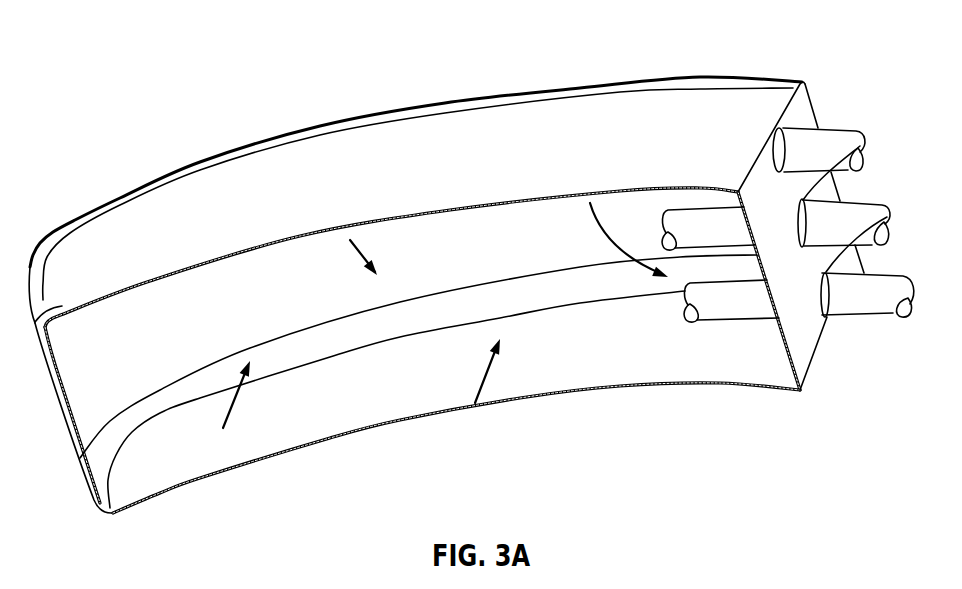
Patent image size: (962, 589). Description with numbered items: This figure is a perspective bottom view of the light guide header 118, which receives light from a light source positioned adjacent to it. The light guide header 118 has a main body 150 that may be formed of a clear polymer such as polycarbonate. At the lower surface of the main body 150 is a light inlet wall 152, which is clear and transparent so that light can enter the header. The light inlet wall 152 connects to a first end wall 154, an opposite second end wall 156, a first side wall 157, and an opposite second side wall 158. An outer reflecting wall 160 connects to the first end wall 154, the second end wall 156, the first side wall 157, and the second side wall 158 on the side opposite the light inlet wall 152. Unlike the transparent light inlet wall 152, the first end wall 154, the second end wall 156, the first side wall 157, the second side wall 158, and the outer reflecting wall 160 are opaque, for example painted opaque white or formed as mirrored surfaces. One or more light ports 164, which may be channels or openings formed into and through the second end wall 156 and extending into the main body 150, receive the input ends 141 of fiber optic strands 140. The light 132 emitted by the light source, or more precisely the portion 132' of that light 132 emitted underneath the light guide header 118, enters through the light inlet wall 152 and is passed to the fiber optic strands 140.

The light guide header 118 is at (110, 142).
The light 132 is at (418, 276).
The portion of light 132' is at (381, 418).
The fiber optic strands 140 is at (843, 136).
The input ends 141 is at (785, 140).
The main body 150 is at (34, 284).
The light inlet wall 152 is at (416, 379).
The first end wall 154 is at (58, 419).
The second end wall 156 is at (850, 263).
The first side wall 157 is at (541, 399).
The second side wall 158 is at (445, 132).
The outer reflecting wall 160 is at (812, 102).
The light ports 164 is at (783, 170).